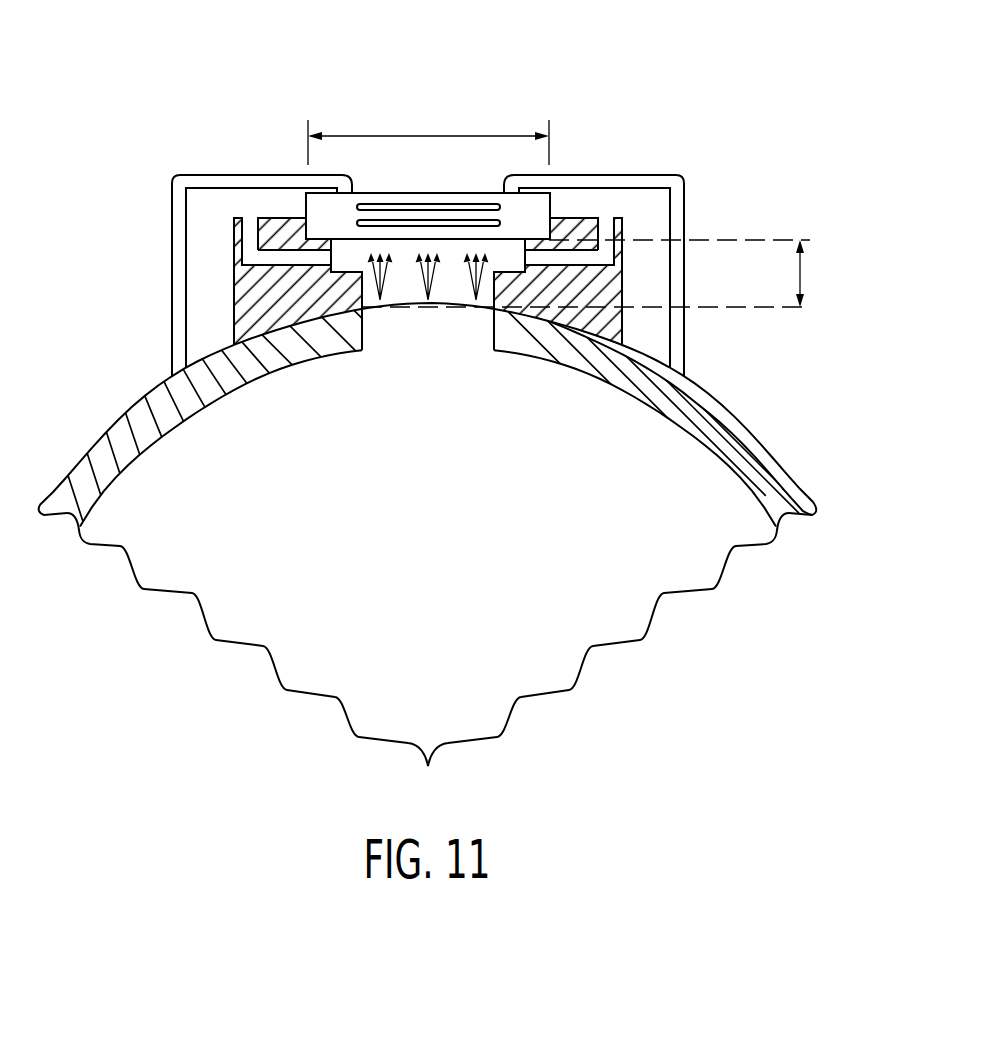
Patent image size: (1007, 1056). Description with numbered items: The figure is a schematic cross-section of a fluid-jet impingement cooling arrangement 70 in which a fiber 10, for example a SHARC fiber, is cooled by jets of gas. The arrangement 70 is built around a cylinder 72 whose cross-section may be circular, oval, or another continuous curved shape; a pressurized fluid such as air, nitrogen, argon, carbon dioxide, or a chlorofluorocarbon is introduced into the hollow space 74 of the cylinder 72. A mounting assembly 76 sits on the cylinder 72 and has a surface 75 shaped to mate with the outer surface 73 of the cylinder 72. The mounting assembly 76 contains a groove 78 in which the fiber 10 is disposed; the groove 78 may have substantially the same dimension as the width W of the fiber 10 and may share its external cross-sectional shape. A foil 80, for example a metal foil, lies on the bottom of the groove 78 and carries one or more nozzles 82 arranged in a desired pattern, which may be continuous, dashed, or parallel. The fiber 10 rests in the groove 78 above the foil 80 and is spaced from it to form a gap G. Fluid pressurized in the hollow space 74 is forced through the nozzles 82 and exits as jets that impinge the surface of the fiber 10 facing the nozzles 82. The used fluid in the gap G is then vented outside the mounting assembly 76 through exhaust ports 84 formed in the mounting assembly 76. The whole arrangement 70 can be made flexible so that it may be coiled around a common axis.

The fiber 10 is at (438, 174).
The cooling arrangement 70 is at (665, 72).
The cylinder 72 is at (757, 442).
The outer surface 73 is at (727, 402).
The hollow space 74 is at (626, 630).
The surface 75 is at (590, 332).
The mounting assembly 76 is at (242, 308).
The groove 78 is at (410, 293).
The foil 80 is at (455, 307).
The nozzles 82 is at (387, 307).
The exhaust ports 84 is at (250, 226).
The width W is at (427, 136).
The gap G is at (820, 280).